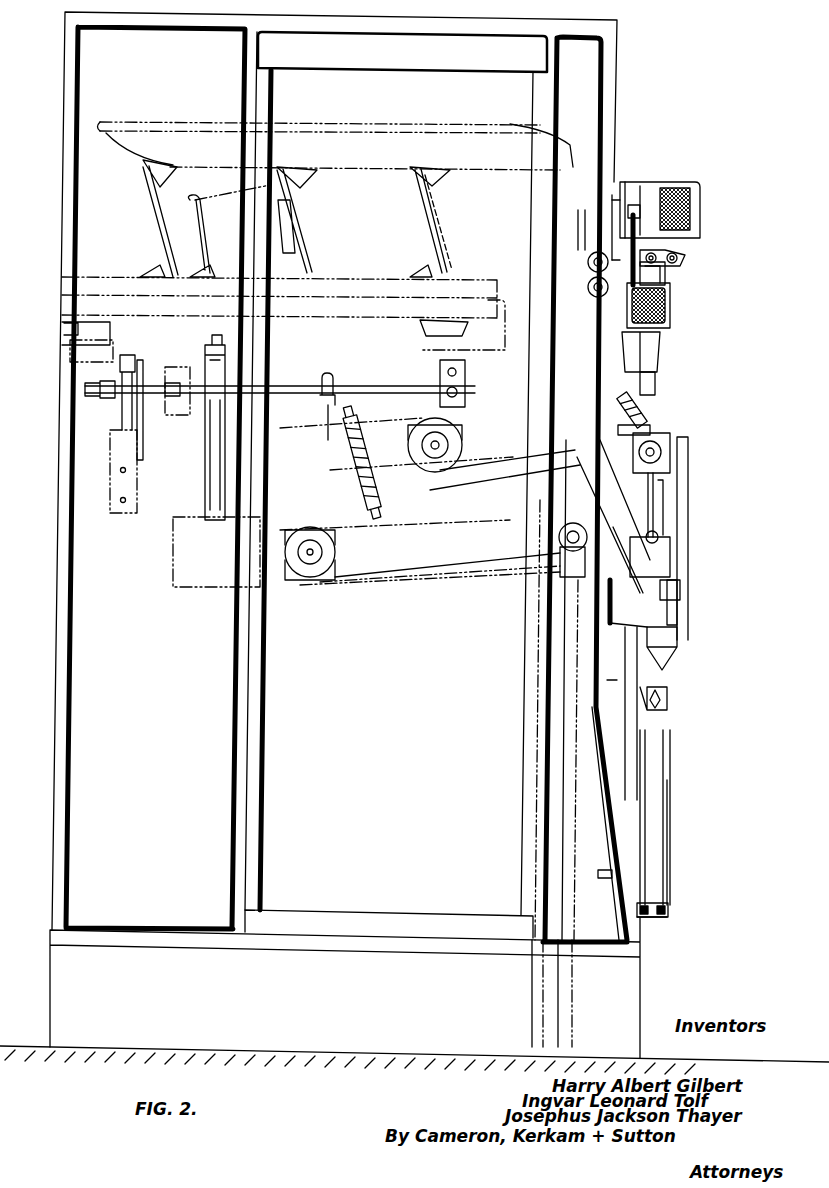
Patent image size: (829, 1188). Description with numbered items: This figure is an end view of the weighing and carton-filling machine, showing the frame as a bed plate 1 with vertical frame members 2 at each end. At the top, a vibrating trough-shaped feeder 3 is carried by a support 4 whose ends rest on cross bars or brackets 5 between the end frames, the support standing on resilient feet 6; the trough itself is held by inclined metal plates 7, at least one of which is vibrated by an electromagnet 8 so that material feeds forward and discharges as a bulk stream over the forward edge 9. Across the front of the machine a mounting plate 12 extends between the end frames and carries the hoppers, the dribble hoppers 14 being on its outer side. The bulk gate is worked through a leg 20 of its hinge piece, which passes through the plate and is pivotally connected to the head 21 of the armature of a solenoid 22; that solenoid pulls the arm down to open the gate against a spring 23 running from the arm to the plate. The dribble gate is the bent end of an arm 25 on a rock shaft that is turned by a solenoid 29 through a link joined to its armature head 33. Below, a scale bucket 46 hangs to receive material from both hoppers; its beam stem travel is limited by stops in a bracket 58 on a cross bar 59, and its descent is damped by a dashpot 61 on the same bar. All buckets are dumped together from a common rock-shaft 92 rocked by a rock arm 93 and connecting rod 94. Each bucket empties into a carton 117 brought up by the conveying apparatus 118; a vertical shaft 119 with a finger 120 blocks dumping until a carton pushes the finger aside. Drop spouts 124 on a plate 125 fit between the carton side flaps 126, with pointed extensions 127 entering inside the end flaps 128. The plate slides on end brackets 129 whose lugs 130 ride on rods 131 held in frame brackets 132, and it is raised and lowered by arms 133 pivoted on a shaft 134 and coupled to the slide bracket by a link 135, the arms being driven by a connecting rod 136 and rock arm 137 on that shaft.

The bed plate 1 is at (320, 935).
The vertical frame members 2 is at (58, 818).
The vibrating trough-shaped feeders 3 is at (198, 143).
The support 4 is at (350, 292).
The cross bars or brackets 5 is at (112, 342).
The resilient feet 6 is at (100, 322).
The inclined metal plates 7 is at (152, 215).
The electromagnet 8 is at (210, 204).
The forward edges 9 is at (470, 390).
The mounting plate 12 is at (625, 230).
The dribble hoppers 14 is at (650, 190).
The leg of hinge piece 20 is at (640, 256).
The head of armature 21 is at (668, 278).
The solenoid 22 is at (672, 320).
The spring 23 is at (660, 234).
The arm 25 is at (660, 352).
The solenoid 29 is at (692, 205).
The head of armature 33 is at (680, 262).
The scale bucket 46 is at (657, 376).
The bracket 58 is at (210, 455).
The cross bar 59 is at (212, 520).
The dashpot 61 is at (226, 430).
The rock-shaft 92 is at (436, 455).
The rock arm 93 is at (522, 460).
The connecting rod 94 is at (530, 490).
The cartons 117 is at (660, 740).
The conveying apparatus 118 is at (670, 830).
The vertical shaft 119 is at (650, 740).
The finger 120 is at (620, 850).
The drop spouts 124 is at (678, 612).
The plate 125 is at (668, 540).
The side flaps 126 is at (672, 698).
The pointed extensions 127 is at (672, 660).
The carton end flaps 128 is at (660, 690).
The end brackets 129 is at (682, 500).
The lugs 130 is at (668, 440).
The rods 131 is at (654, 500).
The brackets 132 is at (652, 405).
The arms 133 is at (440, 560).
The shaft 134 is at (312, 560).
The link 135 is at (660, 530).
The connecting rod 136 is at (553, 624).
The rock arm 137 is at (482, 552).